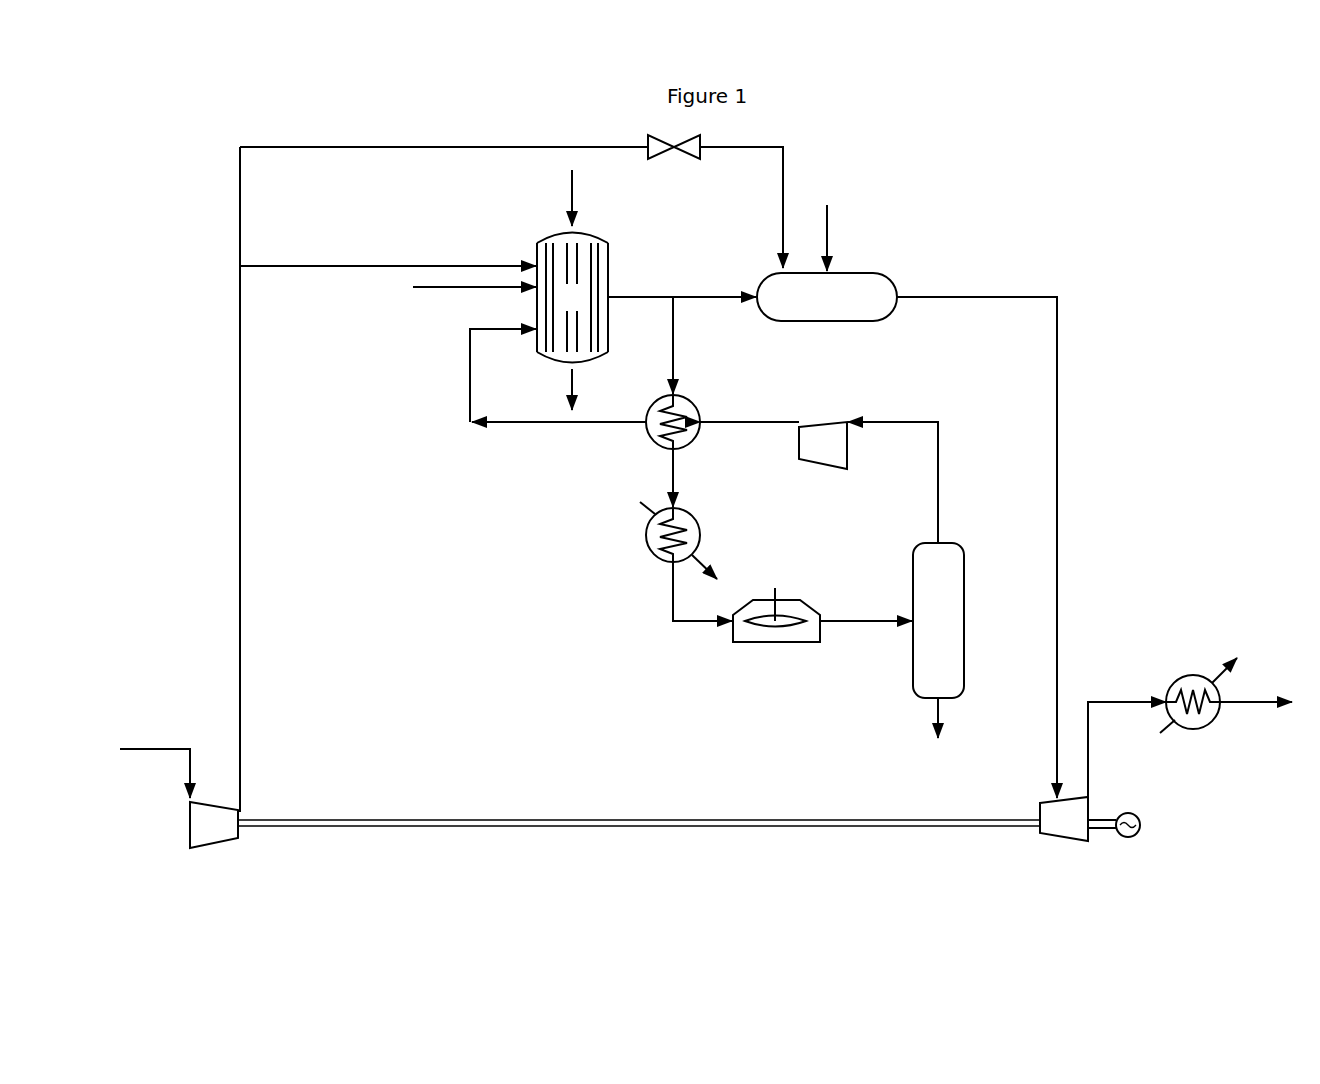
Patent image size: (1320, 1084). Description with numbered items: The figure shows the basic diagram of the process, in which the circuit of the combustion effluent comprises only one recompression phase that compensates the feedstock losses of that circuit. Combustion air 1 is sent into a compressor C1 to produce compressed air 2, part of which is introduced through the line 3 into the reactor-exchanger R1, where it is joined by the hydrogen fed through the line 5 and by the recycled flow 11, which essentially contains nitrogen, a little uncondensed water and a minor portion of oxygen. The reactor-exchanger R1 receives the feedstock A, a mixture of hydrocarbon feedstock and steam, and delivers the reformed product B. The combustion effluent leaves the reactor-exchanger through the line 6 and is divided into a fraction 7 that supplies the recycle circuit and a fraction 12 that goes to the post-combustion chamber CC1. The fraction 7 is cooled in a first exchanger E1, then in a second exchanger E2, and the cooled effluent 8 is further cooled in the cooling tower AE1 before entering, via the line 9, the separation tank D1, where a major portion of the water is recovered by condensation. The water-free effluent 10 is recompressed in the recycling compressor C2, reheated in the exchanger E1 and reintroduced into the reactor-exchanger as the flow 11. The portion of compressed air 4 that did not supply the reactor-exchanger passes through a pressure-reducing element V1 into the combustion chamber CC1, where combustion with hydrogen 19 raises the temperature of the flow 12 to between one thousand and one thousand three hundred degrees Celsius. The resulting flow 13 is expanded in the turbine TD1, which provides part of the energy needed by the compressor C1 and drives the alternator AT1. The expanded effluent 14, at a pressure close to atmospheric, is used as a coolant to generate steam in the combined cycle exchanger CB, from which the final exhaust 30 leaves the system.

The combustion air 1 is at (155, 752).
The compressed air 2 is at (238, 516).
The line 3 is at (309, 265).
The portion of compressed air 4 is at (428, 148).
The line (hydrogen) 5 is at (436, 288).
The line (combustion effluent) 6 is at (628, 296).
The fraction (combustion effluent) 7 is at (677, 362).
The combustion effluent 8 is at (669, 590).
The line (combustion effluent) 9 is at (872, 626).
The combustion effluent 10 is at (940, 481).
The flow / line 11 is at (570, 426).
The fraction (combustion effluent) 12 is at (702, 296).
The flow 13 is at (1059, 423).
The expanded effluent 14 is at (1108, 701).
The hydrogen 19 is at (830, 232).
The exhaust outlet line 30 is at (1246, 700).
The feedstock of the reactor-exchanger A is at (568, 184).
The product outlet B is at (576, 378).
The pressure-reducing element V1 is at (674, 158).
The reactor-exchanger R1 is at (572, 298).
The post-combustion chamber CC1 is at (827, 297).
The first exchanger E1 is at (686, 429).
The second exchanger E2 is at (684, 514).
The recycling compressor C2 is at (828, 463).
The cooling tower AE1 is at (776, 631).
The separation tank D1 is at (938, 640).
The compressor C1 is at (210, 850).
The expansion turbine TD1 is at (1068, 843).
The alternator AT1 is at (1150, 796).
The combined cycle CB is at (1205, 700).